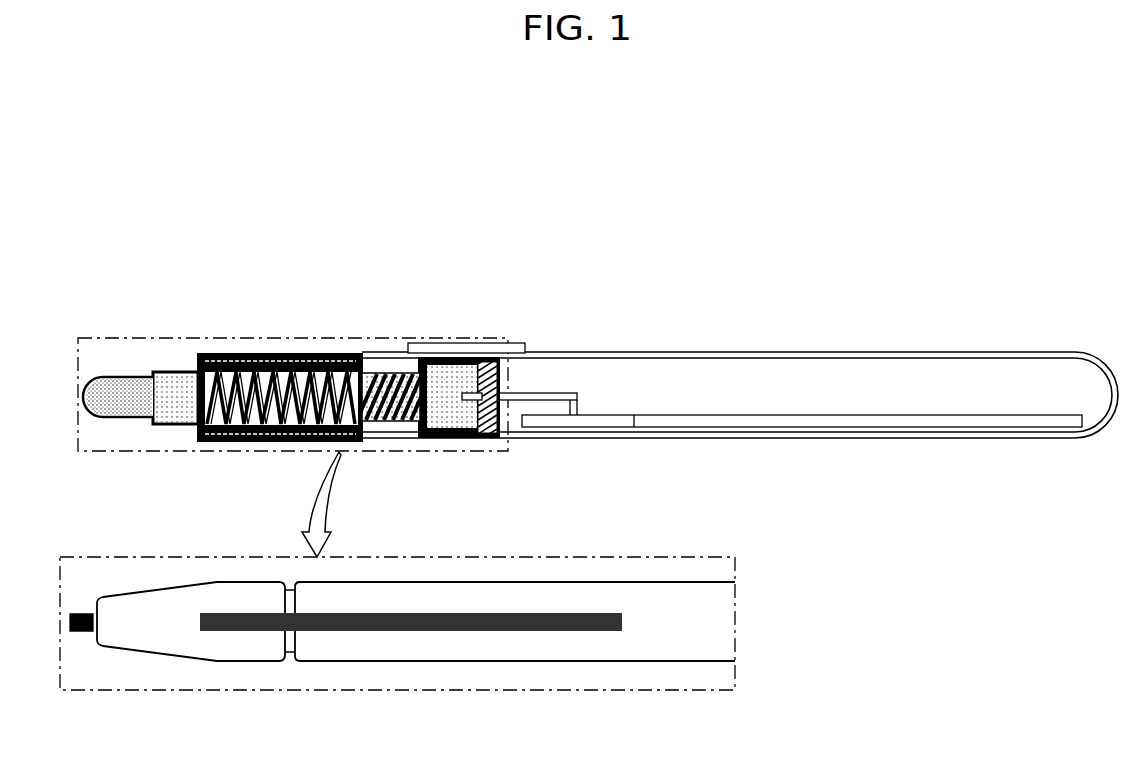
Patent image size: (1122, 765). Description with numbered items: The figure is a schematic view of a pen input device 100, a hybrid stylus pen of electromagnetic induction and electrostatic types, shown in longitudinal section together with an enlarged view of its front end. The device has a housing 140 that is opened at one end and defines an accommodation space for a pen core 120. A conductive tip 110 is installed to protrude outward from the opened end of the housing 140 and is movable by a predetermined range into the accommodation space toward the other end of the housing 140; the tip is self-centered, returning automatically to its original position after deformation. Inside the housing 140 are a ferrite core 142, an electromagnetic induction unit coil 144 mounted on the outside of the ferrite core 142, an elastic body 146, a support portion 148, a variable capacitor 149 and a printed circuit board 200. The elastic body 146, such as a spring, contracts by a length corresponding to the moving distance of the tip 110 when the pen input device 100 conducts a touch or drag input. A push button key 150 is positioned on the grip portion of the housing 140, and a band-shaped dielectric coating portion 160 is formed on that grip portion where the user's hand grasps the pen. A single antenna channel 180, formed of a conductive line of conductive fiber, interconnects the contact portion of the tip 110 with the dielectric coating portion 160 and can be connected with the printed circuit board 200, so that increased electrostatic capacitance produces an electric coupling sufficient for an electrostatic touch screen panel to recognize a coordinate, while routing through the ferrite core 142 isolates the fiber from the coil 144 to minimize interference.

The pen input device 100 is at (746, 312).
The conductive tip 110 is at (118, 376).
The pen core 120 is at (172, 372).
The housing 140 is at (853, 352).
The ferrite core 142 is at (178, 407).
The electromagnetic induction unit coil 144 is at (290, 444).
The elastic body 146 is at (390, 427).
The support portion 148 is at (445, 357).
The variable capacitor 149 is at (490, 438).
The push button key 150 is at (480, 343).
The dielectric coating portion 160 is at (603, 428).
The single antenna channel 180 is at (556, 393).
The printed circuit board 200 is at (912, 416).